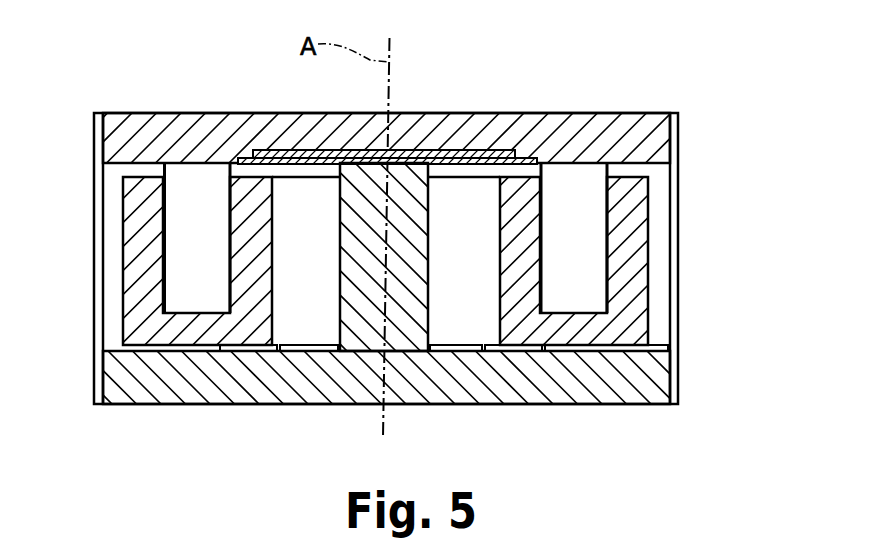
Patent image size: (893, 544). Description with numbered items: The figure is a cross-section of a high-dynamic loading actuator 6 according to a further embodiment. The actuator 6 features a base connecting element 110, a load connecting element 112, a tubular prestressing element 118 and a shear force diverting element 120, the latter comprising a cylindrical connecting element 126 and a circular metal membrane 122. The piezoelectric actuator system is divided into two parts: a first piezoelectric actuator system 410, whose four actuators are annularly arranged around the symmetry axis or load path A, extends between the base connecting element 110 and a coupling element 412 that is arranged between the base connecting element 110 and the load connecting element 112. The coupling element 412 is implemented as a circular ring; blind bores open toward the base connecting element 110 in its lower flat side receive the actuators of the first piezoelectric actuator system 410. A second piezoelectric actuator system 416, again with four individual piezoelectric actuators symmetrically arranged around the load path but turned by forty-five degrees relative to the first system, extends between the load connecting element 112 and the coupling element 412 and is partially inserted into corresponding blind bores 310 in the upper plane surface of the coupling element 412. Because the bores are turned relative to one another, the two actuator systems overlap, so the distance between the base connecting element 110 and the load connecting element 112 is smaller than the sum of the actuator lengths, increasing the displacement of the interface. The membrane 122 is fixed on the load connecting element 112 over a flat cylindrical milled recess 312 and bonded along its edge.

The high-dynamic loading actuator 6 is at (645, 90).
The base connecting element 110 is at (232, 380).
The load connecting element 112 is at (535, 133).
The tubular prestressing element 118 is at (680, 250).
The shear force diverting element 120 is at (320, 275).
The circular metal membrane 122 is at (288, 160).
The cylindrical connecting element 126 is at (422, 297).
The blind bores 310 is at (613, 287).
The flat cylindrical milled recess 312 is at (441, 152).
The first piezoelectric actuator system 410 is at (218, 348).
The coupling element 412 is at (637, 218).
The second piezoelectric actuator system 416 is at (198, 235).